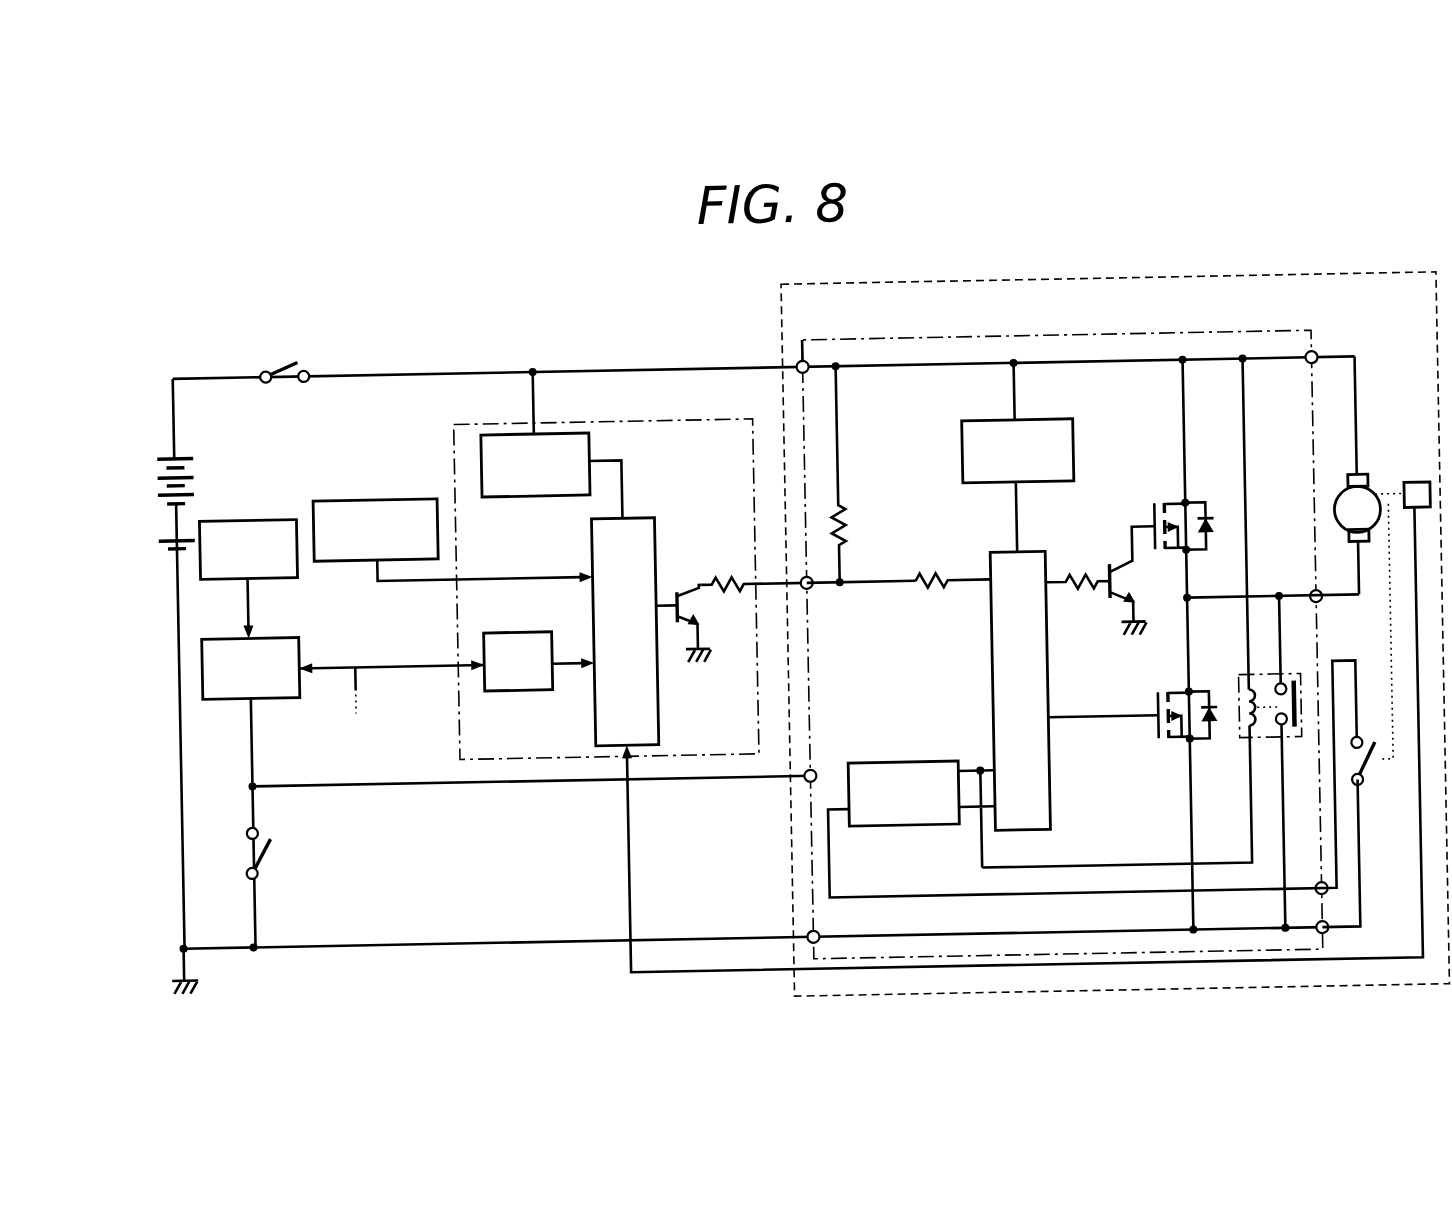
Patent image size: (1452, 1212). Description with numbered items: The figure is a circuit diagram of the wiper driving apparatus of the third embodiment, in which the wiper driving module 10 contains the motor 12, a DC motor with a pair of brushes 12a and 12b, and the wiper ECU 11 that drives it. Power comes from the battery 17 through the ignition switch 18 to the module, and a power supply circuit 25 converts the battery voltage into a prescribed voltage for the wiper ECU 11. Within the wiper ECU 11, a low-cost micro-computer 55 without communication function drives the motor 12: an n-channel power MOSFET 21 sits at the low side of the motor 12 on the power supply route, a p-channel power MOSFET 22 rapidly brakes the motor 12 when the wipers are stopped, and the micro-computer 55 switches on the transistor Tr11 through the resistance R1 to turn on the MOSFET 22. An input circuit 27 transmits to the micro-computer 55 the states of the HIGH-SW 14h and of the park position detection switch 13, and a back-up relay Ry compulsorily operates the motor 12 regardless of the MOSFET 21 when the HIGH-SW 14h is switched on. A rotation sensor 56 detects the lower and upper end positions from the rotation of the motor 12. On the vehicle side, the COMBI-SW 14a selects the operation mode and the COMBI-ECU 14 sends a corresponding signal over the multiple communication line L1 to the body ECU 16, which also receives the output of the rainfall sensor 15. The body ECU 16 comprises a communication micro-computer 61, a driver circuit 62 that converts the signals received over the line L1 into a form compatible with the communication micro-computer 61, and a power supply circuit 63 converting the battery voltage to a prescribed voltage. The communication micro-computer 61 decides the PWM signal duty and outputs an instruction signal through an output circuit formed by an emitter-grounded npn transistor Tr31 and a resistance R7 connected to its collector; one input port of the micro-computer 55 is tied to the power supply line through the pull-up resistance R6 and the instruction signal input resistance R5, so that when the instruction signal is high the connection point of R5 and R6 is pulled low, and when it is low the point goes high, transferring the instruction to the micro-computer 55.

The wiper driving module 10 is at (878, 286).
The wiper ECU 11 is at (910, 339).
The motor 12 is at (1357, 476).
The brush 12a is at (1354, 487).
The brush 12b is at (1353, 553).
The park position detection switch 13 is at (1373, 783).
The COMBI-ECU 14 is at (222, 629).
The COMBI-SW 14a is at (240, 511).
The HIGH-SW 14h is at (268, 847).
The rainfall sensor 15 is at (361, 493).
The body ECU 16 is at (571, 418).
The battery 17 is at (171, 447).
The ignition switch 18 is at (291, 354).
The n-channel power MOSFET 21 is at (1159, 740).
The p-channel power MOSFET 22 is at (1156, 523).
The power supply circuit 25 is at (1052, 422).
The input circuit 27 is at (929, 765).
The micro-computer 55 is at (1031, 554).
The rotation sensor 56 is at (1420, 493).
The communication micro-computer 61 is at (641, 514).
The driver circuit 62 is at (510, 690).
The power supply circuit 63 is at (512, 493).
The multiple communication line L1 is at (397, 661).
The resistance R1 is at (1082, 603).
The instruction signal input resistance R5 is at (938, 591).
The pull-up resistance R6 is at (852, 523).
The resistance R7 is at (734, 592).
The transistor Tr11 is at (1125, 572).
The npn transistor Tr31 is at (685, 582).
The back-up relay Ry is at (1287, 745).